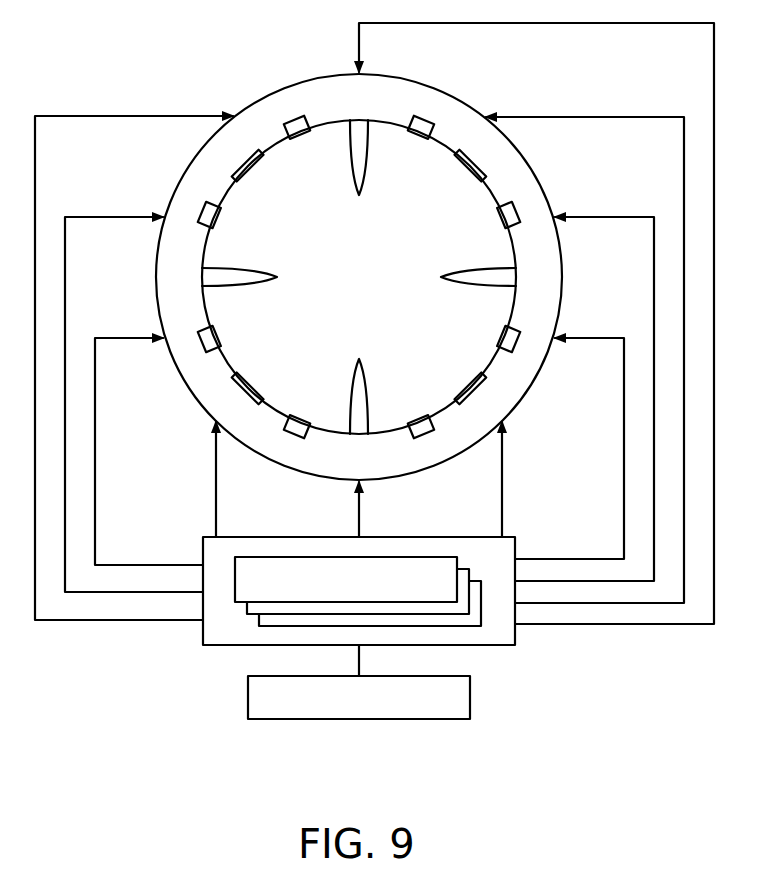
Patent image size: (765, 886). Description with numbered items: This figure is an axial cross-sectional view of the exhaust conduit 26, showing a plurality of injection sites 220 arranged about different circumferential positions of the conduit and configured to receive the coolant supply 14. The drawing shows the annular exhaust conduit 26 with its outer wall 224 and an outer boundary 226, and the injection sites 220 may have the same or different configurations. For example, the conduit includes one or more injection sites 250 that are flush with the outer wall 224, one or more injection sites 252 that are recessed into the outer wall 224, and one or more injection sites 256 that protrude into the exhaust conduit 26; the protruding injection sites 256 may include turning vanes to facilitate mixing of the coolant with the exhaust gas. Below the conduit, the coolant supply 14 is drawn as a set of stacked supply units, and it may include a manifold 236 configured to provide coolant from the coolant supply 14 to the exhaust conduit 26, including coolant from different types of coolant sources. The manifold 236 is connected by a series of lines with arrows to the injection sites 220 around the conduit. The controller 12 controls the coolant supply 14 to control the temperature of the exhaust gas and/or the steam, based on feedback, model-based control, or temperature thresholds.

The controller 12 is at (298, 720).
The coolant supply 14 is at (240, 604).
The exhaust conduit 26 is at (324, 260).
The injection sites 220 is at (204, 268).
The outer wall 224 is at (277, 142).
The outer wall 226 is at (188, 168).
The manifold 236 is at (500, 646).
The injection sites flush with the outer wall 250 is at (462, 170).
The injection sites recessed into the outer wall 252 is at (503, 217).
The injection sites that protrude into the exhaust conduit 256 is at (480, 287).